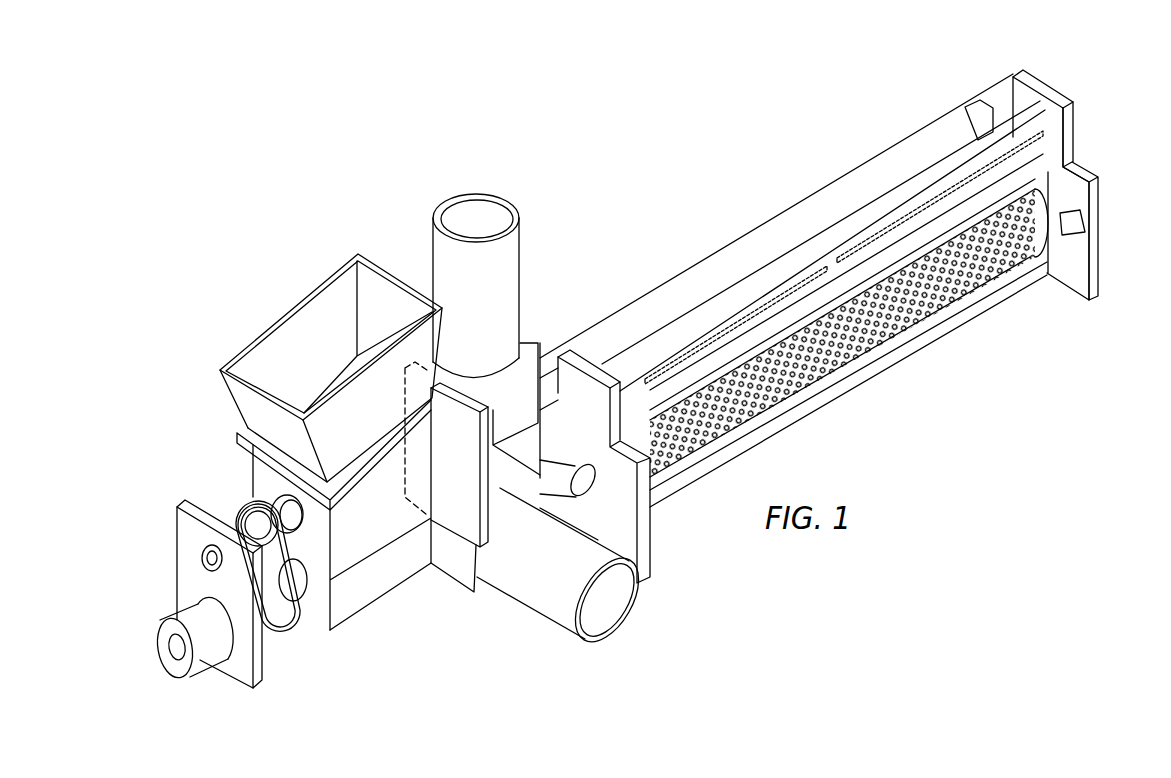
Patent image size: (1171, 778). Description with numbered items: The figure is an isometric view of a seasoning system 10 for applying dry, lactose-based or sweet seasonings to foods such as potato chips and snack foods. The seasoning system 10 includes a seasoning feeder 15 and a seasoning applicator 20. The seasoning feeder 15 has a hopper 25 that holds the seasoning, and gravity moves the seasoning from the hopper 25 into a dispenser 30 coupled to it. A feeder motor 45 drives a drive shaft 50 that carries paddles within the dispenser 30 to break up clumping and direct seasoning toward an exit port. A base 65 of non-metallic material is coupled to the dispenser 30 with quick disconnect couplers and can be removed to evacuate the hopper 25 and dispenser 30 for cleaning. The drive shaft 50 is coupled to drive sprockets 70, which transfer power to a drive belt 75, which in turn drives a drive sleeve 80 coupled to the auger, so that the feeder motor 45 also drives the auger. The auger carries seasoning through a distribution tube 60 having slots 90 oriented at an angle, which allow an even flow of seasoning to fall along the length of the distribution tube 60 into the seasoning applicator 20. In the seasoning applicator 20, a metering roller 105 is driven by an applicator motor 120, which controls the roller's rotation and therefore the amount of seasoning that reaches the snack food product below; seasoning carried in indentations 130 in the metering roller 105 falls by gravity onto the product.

The seasoning system 10 is at (640, 93).
The seasoning feeder 15 is at (184, 430).
The seasoning applicator 20 is at (1006, 442).
The hopper 25 is at (300, 308).
The dispenser 30 is at (252, 468).
The feeder motor 45 is at (522, 292).
The drive shaft 50 is at (310, 522).
The distribution tube 60 is at (818, 233).
The base 65 is at (384, 598).
The drive sprockets 70 is at (240, 513).
The drive belt 75 is at (273, 633).
The drive sleeve 80 is at (293, 605).
The slots 90 is at (720, 318).
The metering roller 105 is at (1080, 198).
The applicator motor 120 is at (537, 607).
The indentations 130 is at (947, 277).